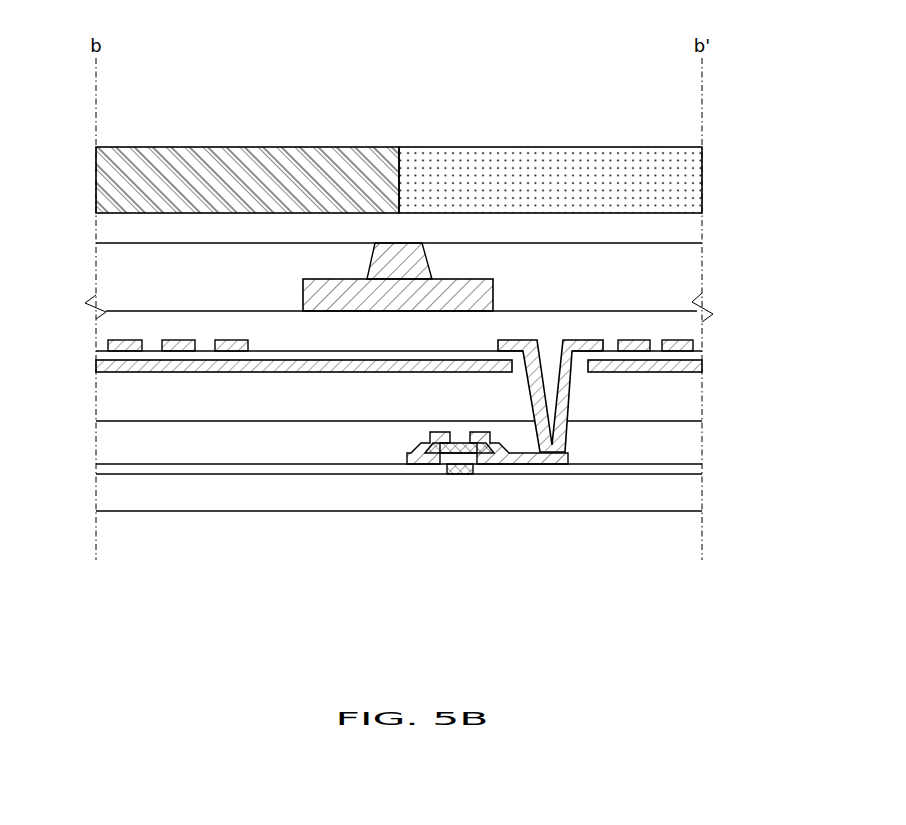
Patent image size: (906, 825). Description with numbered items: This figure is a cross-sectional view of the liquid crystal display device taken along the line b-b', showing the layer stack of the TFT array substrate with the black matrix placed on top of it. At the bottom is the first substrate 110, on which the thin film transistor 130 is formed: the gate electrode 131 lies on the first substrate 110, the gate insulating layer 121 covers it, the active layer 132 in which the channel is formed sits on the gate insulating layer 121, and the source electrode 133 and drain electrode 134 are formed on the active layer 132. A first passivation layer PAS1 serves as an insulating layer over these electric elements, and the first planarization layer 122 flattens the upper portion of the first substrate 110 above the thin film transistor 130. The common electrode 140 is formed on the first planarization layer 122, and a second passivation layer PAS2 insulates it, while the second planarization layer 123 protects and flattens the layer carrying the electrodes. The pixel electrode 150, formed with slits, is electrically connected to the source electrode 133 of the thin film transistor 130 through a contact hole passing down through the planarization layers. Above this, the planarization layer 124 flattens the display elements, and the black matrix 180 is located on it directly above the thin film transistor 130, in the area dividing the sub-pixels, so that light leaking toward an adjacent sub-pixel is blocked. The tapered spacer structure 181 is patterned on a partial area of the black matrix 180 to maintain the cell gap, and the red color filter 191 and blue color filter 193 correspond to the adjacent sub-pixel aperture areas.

The blue color filter 193 is at (125, 183).
The red color filter 191 is at (685, 188).
The overcoating layer 124 is at (687, 229).
The spacer structure 181 is at (403, 263).
The black matrix 180 is at (352, 293).
The second planarization layer 123 is at (117, 327).
The pixel electrode 150 is at (177, 344).
The second passivation layer PAS2 is at (690, 353).
The common electrode 140 is at (700, 369).
The first planarization layer 122 is at (688, 406).
The first passivation layer PAS1 is at (688, 441).
The gate insulating layer 121 is at (690, 466).
The first substrate 110 is at (688, 499).
The thin film transistor 130 is at (480, 515).
The drain electrode 134 is at (410, 464).
The source electrode 133 is at (517, 460).
The gate electrode 131 is at (473, 470).
The active layer 132 is at (437, 475).